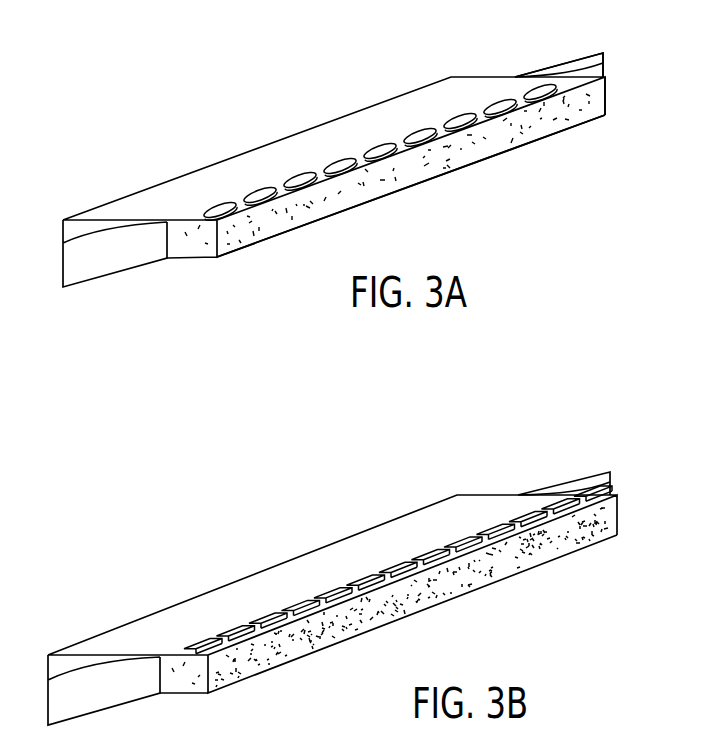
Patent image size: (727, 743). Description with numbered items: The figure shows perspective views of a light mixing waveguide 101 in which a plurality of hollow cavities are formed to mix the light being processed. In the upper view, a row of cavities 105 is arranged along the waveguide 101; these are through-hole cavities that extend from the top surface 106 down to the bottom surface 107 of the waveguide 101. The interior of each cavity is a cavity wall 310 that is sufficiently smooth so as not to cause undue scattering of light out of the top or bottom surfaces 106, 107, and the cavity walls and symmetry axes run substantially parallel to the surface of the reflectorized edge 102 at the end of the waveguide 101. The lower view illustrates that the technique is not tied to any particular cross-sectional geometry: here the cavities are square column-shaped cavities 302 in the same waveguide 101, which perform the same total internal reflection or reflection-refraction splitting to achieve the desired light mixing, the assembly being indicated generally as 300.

In FIG. 3A, the optical waveguide device 300 is at (365, 145).
In FIG. 3A, the waveguide 101 is at (365, 167).
In FIG. 3B, the waveguide 101 is at (332, 597).
In FIG. 3A, the reflectorized edge 102 is at (600, 98).
In FIG. 3A, the cavities 105 is at (418, 125).
In FIG. 3A, the top surface 106 is at (200, 183).
In FIG. 3A, the bottom surface 107 is at (360, 200).
In FIG. 3A, the cavity wall 310 is at (558, 107).
In FIG. 3B, the square column-shaped cavities 302 is at (497, 528).